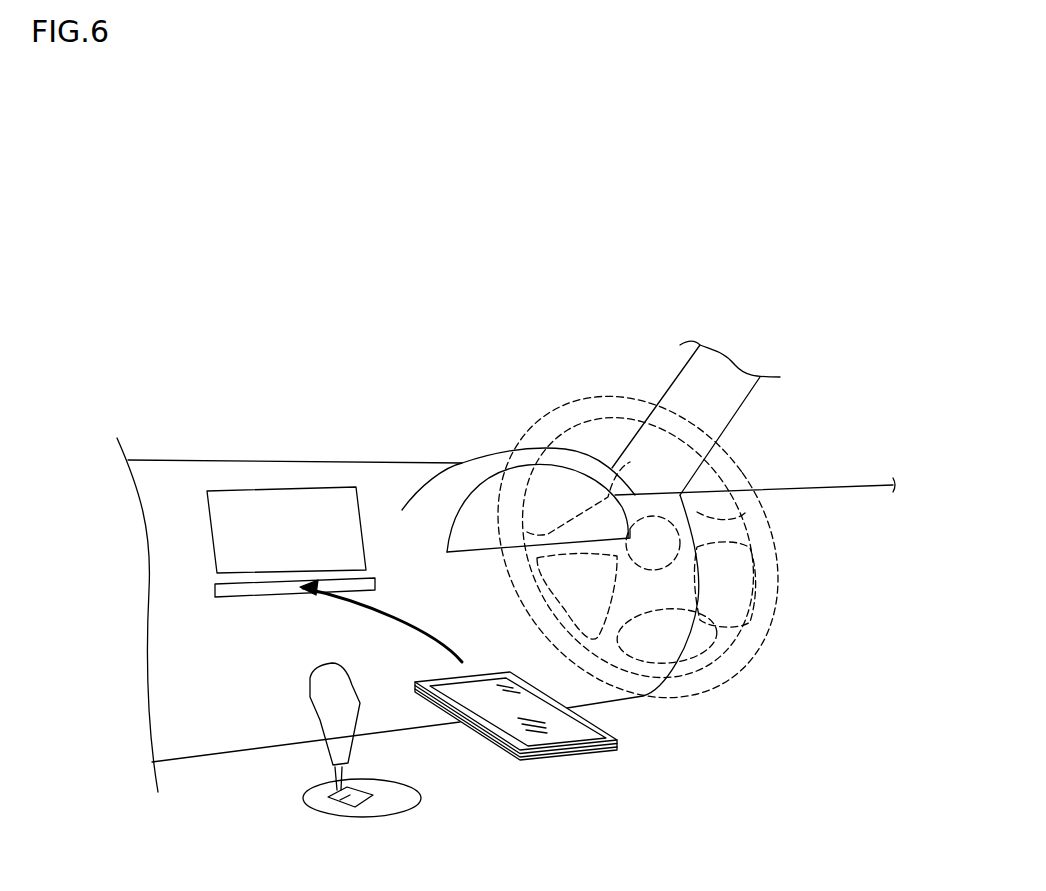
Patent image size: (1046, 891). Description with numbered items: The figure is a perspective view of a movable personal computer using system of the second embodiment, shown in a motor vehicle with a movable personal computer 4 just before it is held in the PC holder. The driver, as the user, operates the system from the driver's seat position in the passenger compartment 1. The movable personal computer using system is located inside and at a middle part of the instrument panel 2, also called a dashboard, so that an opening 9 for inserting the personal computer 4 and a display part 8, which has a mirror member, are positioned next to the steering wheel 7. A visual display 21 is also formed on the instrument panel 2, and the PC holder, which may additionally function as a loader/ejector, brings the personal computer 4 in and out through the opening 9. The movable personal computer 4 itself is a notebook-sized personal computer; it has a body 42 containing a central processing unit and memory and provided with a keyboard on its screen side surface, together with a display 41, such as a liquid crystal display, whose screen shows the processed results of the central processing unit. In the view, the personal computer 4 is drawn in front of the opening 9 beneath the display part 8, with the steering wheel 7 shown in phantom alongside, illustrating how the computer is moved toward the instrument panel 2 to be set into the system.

The passenger compartment 1 is at (652, 555).
The instrument panel 2 is at (372, 477).
The visual display 21 is at (487, 500).
The steering wheel 7 is at (730, 663).
The display part 8 is at (250, 505).
The opening 9 is at (252, 594).
The movable personal computer 4 is at (562, 761).
The display 41 is at (600, 720).
The body 42 is at (570, 757).